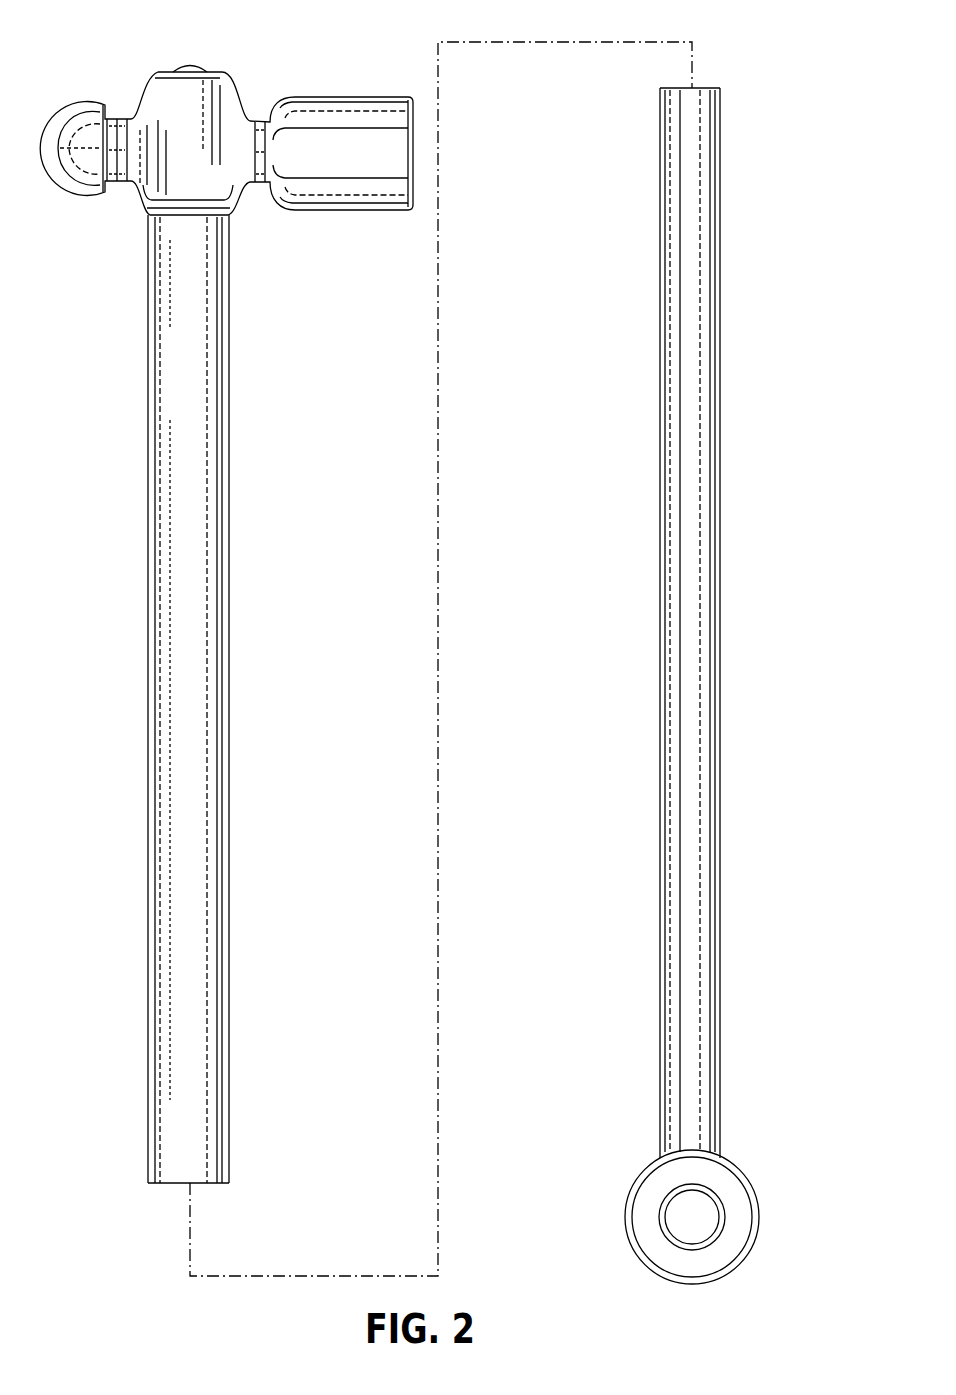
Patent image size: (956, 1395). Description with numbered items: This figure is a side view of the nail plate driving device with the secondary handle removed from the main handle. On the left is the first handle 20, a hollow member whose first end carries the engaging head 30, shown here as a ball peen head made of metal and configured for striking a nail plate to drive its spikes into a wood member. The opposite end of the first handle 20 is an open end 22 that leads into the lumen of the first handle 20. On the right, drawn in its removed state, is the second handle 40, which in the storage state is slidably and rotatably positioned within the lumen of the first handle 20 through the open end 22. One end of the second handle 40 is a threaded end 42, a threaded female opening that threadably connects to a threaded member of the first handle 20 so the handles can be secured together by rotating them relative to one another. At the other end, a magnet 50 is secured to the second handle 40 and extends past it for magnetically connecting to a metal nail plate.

The first handle 20 is at (230, 392).
The open end 22 is at (220, 1183).
The engaging head 30 is at (380, 71).
The second handle 40 is at (721, 566).
The threaded end 42 is at (704, 88).
The magnet 50 is at (757, 1182).